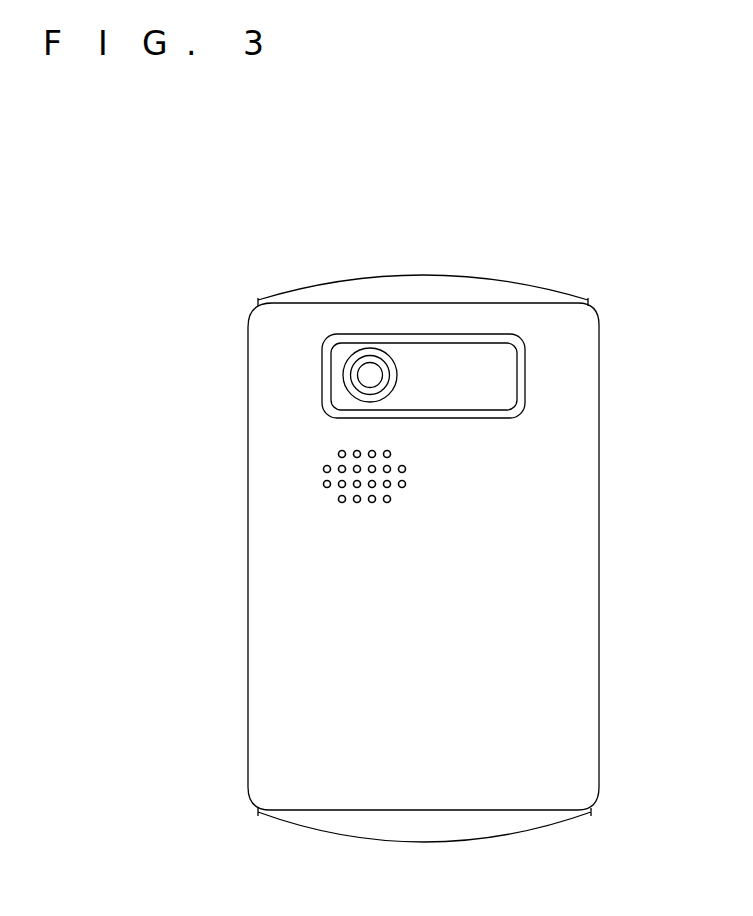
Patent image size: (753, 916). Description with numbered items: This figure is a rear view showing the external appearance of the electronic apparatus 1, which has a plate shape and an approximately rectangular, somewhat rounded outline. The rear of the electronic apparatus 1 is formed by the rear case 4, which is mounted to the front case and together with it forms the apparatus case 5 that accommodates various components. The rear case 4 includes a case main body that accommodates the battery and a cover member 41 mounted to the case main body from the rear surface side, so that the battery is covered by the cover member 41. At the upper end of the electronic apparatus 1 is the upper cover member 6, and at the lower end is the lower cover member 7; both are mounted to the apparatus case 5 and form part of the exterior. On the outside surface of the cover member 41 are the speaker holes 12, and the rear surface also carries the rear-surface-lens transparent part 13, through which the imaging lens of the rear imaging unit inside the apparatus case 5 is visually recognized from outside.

The electronic apparatus 1 is at (523, 258).
The rear case 4 is at (582, 530).
The cover member 41 is at (582, 597).
The apparatus case 5 is at (600, 477).
The upper cover member 6 is at (420, 276).
The lower cover member 7 is at (422, 830).
The speaker holes 12 is at (318, 486).
The rear-surface-lens transparent part 13 is at (370, 375).